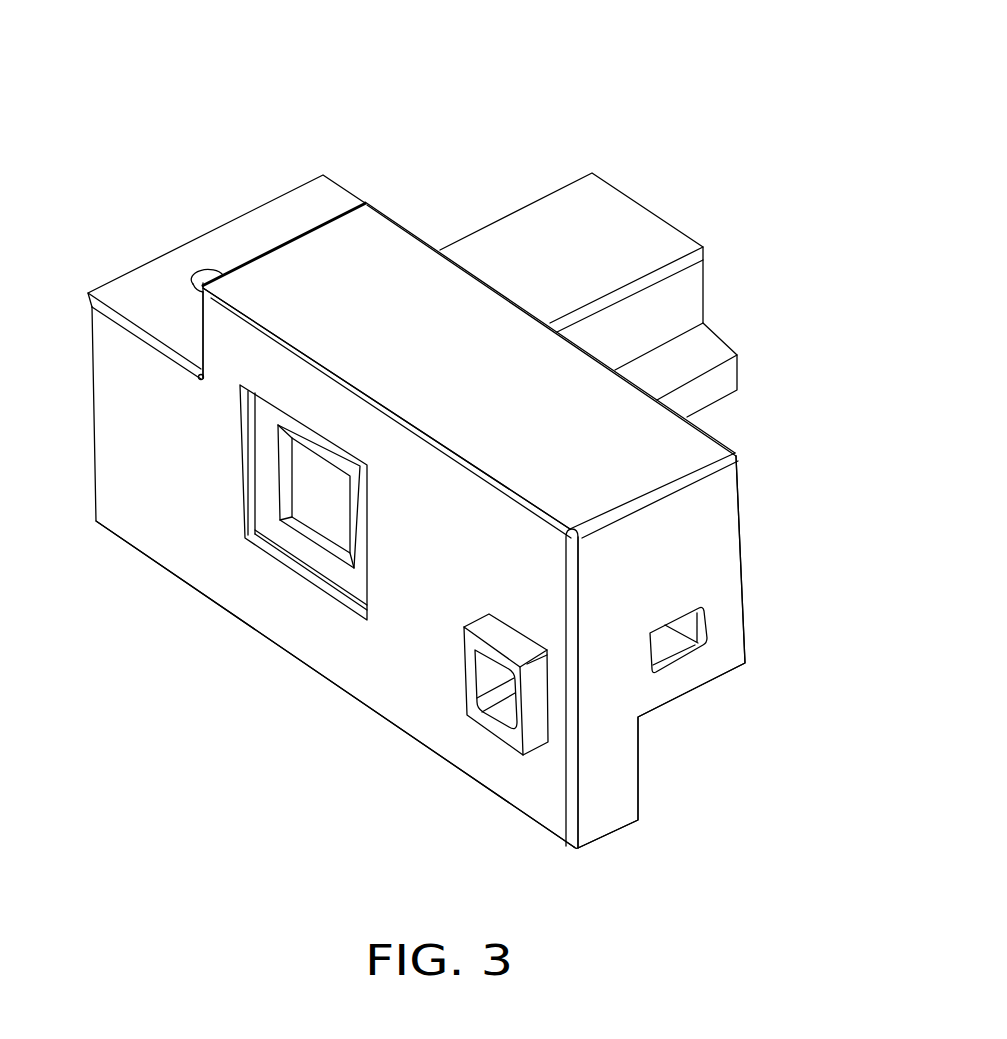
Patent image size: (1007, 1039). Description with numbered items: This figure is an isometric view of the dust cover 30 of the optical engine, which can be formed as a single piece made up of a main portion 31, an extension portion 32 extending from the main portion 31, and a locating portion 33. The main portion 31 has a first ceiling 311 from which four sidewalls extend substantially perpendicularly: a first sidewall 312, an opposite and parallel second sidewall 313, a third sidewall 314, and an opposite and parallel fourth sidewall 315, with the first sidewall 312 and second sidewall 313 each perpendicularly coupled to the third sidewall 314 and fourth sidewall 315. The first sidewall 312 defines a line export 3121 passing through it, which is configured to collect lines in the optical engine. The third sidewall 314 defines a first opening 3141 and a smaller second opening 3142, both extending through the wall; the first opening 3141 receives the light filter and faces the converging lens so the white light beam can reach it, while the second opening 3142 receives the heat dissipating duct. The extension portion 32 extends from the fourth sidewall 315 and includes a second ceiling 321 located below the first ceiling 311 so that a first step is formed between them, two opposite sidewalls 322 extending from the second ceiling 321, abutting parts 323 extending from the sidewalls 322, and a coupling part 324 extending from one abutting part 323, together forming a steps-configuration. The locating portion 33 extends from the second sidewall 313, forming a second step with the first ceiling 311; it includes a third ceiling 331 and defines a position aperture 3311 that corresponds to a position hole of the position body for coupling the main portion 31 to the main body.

The dust cover 30 is at (429, 66).
The main portion 31 is at (661, 768).
The first ceiling 311 is at (377, 237).
The first sidewall 312 is at (713, 537).
The line export 3121 is at (670, 644).
The second sidewall 313 is at (198, 318).
The third sidewall 314 is at (525, 778).
The first opening 3141 is at (280, 557).
The second opening 3142 is at (482, 720).
The fourth sidewall 315 is at (719, 441).
The extension portion 32 is at (633, 184).
The second ceiling 321 is at (552, 210).
The sidewall 322 is at (683, 293).
The abutting part 323 is at (705, 350).
The coupling part 324 is at (727, 383).
The locating portion 33 is at (263, 202).
The third ceiling 331 is at (313, 193).
The position aperture 3311 is at (203, 272).